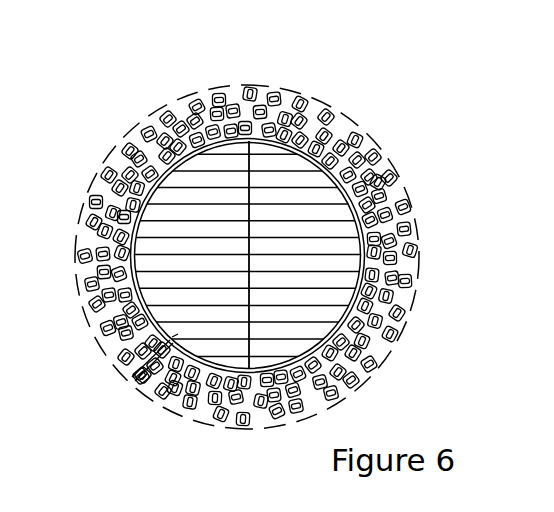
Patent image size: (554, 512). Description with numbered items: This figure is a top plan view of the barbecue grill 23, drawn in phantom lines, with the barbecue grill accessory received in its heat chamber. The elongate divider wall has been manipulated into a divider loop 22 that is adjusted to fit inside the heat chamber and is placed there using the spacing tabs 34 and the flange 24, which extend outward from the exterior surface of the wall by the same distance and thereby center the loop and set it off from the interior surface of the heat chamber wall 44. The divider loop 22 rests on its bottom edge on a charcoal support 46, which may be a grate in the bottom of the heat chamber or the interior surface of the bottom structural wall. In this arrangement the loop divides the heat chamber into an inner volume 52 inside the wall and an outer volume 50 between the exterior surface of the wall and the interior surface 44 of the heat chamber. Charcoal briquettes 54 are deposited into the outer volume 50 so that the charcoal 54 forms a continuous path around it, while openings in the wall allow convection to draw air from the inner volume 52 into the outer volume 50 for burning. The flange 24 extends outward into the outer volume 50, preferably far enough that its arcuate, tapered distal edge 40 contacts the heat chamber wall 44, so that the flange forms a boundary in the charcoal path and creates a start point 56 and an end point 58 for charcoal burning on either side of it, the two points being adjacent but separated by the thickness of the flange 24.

The divider loop 22 is at (179, 176).
The barbecue grill 23 is at (333, 113).
The flange 24 is at (140, 380).
The spacing tabs 34 is at (224, 128).
The distal edge of the flange 40 is at (132, 377).
The interior surface of the heat chamber wall 44 is at (402, 338).
The charcoal support 46 is at (318, 313).
The outer volume 50 is at (133, 135).
The inner volume 52 is at (160, 152).
The charcoal briquettes 54 is at (385, 177).
The start point 56 is at (172, 394).
The end point 58 is at (104, 344).